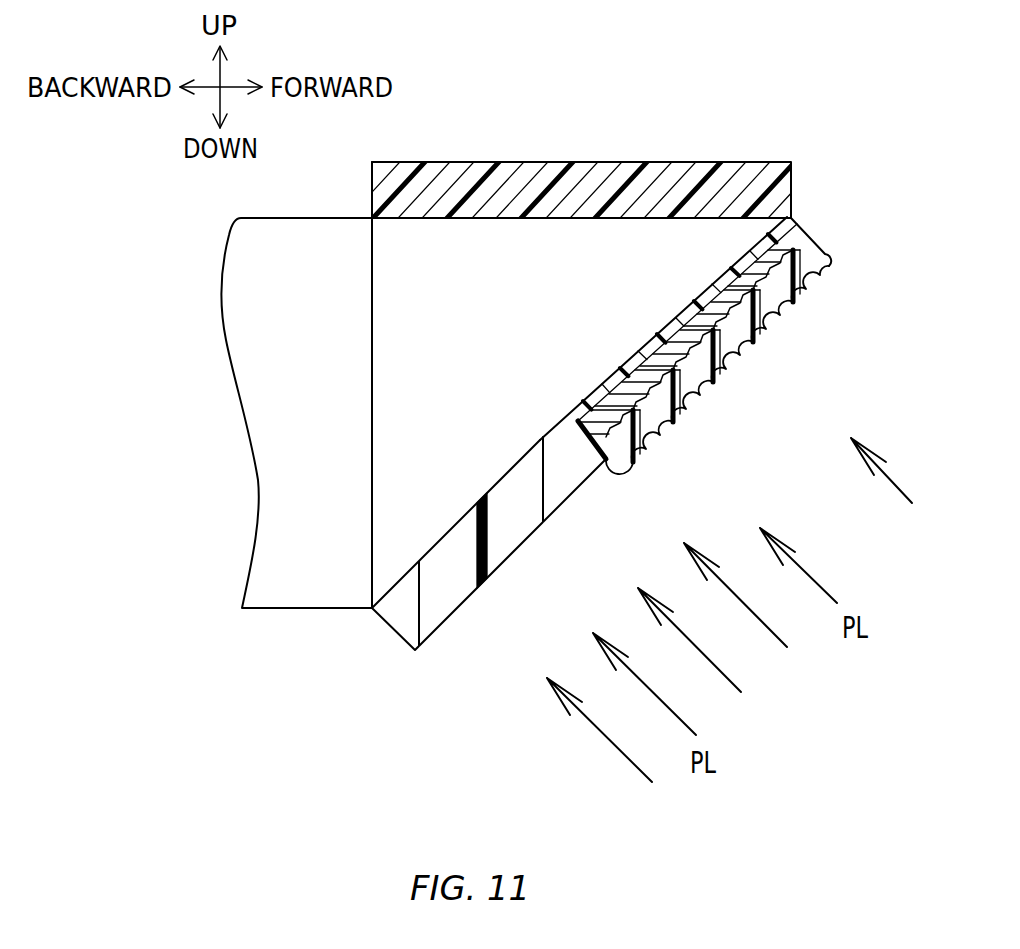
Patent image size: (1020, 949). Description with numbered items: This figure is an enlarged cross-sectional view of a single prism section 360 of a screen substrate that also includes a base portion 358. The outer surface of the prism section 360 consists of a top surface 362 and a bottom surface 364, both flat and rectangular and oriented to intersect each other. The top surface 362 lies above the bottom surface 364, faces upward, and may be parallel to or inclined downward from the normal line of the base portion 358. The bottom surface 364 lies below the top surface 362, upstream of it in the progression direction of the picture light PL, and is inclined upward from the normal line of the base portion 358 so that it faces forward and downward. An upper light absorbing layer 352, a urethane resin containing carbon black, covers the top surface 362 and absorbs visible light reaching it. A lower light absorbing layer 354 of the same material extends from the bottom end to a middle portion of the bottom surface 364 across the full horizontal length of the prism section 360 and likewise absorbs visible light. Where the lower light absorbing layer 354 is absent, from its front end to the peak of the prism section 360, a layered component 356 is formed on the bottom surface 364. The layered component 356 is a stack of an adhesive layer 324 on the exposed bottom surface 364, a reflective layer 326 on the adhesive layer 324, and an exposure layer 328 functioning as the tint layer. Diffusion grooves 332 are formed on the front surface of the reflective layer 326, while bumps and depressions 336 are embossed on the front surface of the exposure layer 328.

The adhesive layer 324 is at (727, 263).
The reflective layer 326 is at (703, 342).
The exposure layer 328 is at (836, 363).
The diffusion grooves 332 is at (805, 225).
The bumps and depressions 336 is at (832, 252).
The upper light absorbing layer 352 is at (630, 162).
The lower light absorbing layer 354 is at (390, 543).
The layered component 356 is at (711, 376).
The base portion 358 is at (332, 358).
The prism section 360 is at (493, 358).
The top surface 362 is at (480, 218).
The bottom surface 364 is at (482, 498).